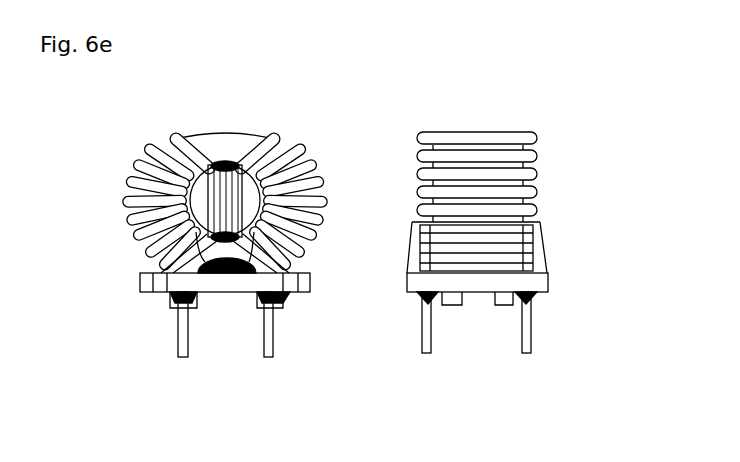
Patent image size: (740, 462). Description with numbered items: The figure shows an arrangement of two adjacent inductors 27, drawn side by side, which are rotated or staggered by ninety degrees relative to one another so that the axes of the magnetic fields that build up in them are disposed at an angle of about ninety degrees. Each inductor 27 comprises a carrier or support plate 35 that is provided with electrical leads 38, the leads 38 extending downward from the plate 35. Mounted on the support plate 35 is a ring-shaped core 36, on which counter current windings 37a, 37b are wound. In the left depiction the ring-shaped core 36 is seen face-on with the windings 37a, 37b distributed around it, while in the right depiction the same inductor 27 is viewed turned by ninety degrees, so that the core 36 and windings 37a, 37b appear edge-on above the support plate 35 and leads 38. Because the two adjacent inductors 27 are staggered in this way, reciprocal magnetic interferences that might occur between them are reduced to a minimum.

The inductor 27 is at (126, 236).
The support plate 35 is at (418, 298).
The ring-shaped core 36 is at (220, 134).
The counter current winding 37a is at (177, 147).
The counter current winding 37b is at (275, 146).
The electrical leads 38 is at (260, 357).